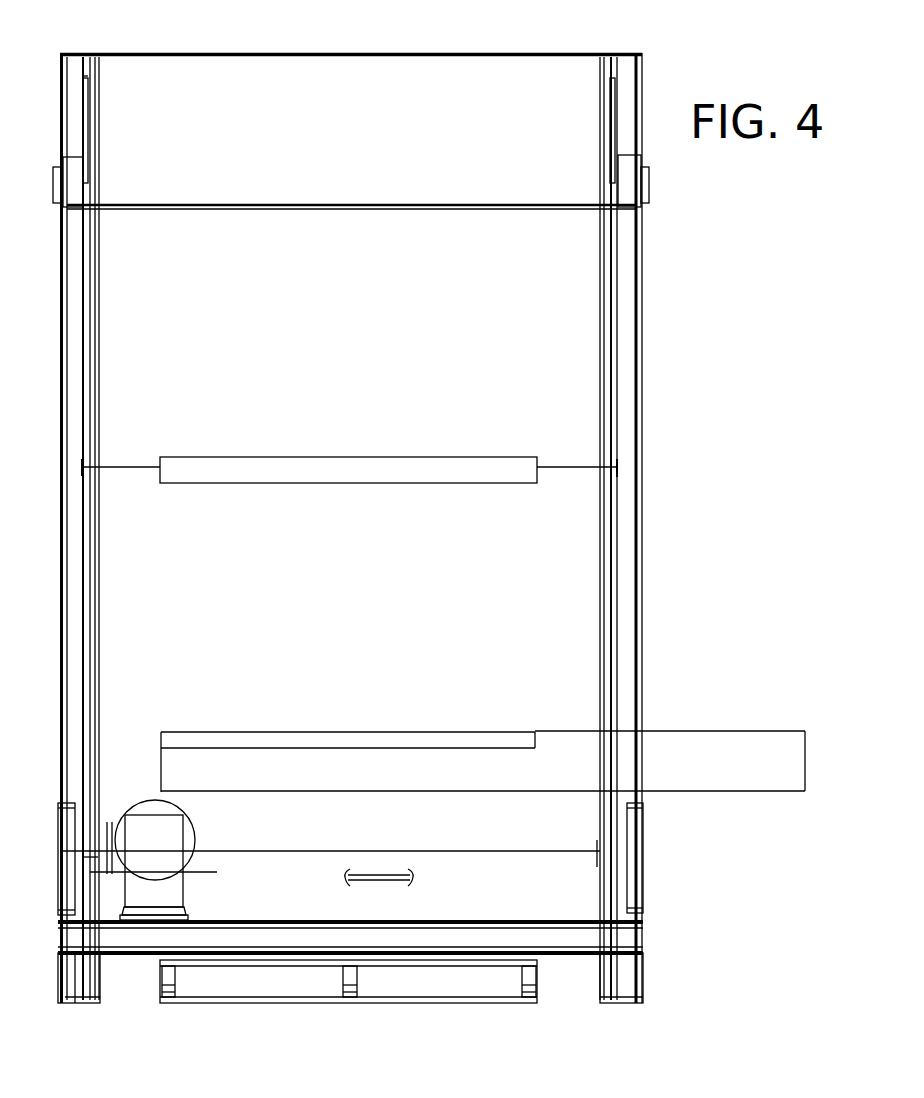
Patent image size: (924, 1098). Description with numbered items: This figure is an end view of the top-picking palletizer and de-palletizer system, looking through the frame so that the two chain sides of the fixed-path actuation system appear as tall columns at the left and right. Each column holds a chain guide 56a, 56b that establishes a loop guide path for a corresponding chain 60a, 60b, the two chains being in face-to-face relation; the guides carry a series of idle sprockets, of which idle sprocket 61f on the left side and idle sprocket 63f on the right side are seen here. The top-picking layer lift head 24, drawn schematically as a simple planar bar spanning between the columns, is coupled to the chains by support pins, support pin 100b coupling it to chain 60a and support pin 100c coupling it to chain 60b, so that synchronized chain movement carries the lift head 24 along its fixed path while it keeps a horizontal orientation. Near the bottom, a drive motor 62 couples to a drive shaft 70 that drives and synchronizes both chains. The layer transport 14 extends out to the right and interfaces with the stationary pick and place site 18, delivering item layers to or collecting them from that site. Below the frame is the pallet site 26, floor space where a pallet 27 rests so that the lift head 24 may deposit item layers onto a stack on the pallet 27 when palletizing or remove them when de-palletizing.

The layer transport 14 is at (722, 742).
The stationary pick and place site 18 is at (322, 731).
The top-picking layer lift head 24 is at (352, 483).
The pallet site 26 is at (122, 987).
The pallet 27 is at (212, 1003).
The chain guide 56a is at (84, 70).
The chain guide 56b is at (612, 71).
The chain 60a is at (83, 328).
The chain 60b is at (606, 318).
The idle sprocket 61f is at (93, 133).
The idle sprocket 63f is at (612, 133).
The drive motor 62 is at (178, 888).
The drive shaft 70 is at (372, 883).
The support pin 100b is at (140, 468).
The support pin 100c is at (575, 468).